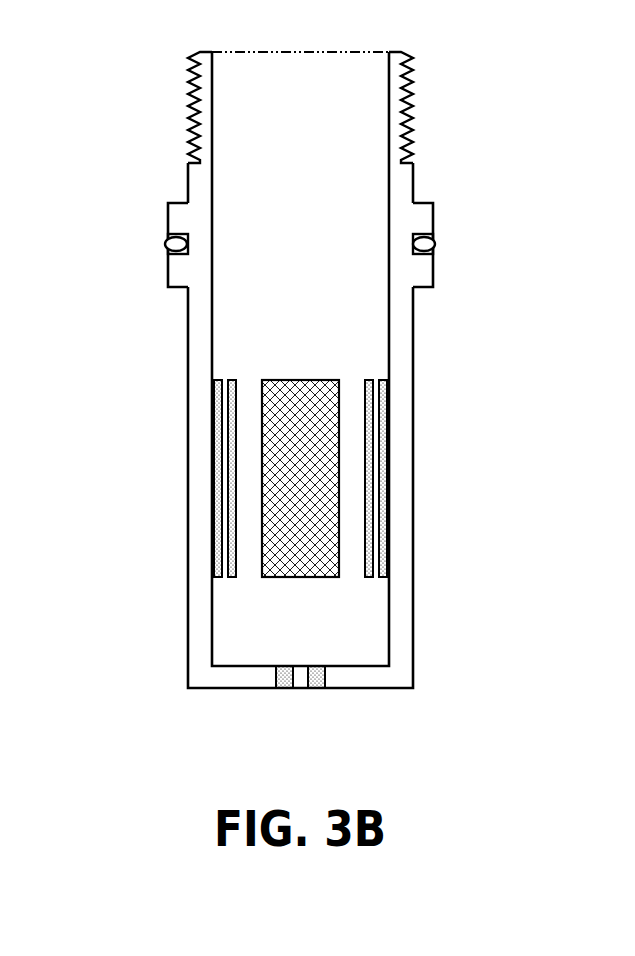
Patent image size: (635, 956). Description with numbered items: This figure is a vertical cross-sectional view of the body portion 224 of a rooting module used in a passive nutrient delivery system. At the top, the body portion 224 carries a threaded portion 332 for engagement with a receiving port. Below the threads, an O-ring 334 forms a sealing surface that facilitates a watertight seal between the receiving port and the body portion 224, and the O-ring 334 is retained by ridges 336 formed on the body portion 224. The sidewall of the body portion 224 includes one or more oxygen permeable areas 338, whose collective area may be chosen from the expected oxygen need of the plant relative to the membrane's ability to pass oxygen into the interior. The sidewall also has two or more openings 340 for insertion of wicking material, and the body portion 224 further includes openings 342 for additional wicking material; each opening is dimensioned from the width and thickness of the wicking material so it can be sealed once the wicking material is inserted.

The body portion 224 is at (355, 690).
The threaded portion 332 is at (467, 52).
The O-ring 334 is at (169, 247).
The ridges 336 is at (170, 222).
The oxygen permeable areas 338 is at (282, 578).
The openings 340 is at (383, 378).
The openings 342 is at (313, 690).